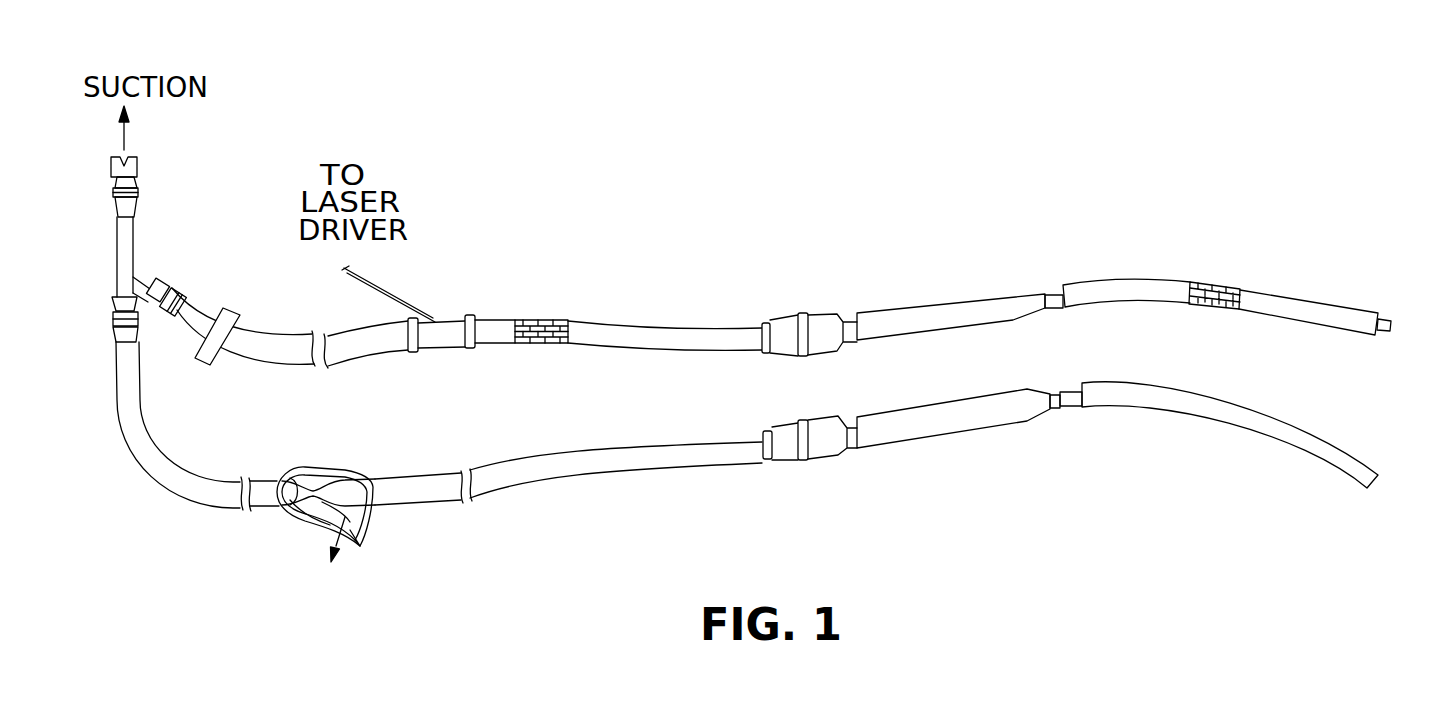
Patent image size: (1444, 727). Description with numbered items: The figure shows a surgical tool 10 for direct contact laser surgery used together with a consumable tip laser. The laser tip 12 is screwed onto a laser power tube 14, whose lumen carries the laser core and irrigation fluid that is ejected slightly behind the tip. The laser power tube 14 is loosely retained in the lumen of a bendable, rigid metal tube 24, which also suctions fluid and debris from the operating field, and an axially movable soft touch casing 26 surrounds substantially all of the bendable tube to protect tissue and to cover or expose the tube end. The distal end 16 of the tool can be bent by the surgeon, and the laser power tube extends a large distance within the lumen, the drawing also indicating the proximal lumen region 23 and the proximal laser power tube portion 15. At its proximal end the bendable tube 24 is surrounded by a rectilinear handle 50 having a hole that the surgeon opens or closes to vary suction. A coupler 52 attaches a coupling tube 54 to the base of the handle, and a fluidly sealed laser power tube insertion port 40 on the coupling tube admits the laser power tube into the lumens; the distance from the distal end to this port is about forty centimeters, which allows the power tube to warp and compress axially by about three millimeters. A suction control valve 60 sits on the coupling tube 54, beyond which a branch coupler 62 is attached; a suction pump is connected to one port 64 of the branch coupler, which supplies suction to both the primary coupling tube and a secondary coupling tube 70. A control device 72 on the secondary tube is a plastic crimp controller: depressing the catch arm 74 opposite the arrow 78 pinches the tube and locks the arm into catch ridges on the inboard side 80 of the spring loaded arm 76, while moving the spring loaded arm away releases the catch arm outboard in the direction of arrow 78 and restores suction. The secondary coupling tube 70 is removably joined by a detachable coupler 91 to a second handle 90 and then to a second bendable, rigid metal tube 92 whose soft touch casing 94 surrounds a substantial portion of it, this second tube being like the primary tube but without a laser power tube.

The surgical tool 10 is at (1106, 270).
The laser tip 12 is at (1391, 326).
The laser power tube 14 is at (1237, 289).
The proximal laser power tube portion 15 is at (553, 321).
The distal end 16 is at (1370, 307).
The proximal lumen region 23 is at (540, 344).
The bendable rigid tube 24 is at (1212, 288).
The soft touch casing 26 is at (1202, 282).
The laser power tube insertion port 40 is at (451, 318).
The handle 50 is at (933, 303).
The coupler 52 is at (812, 312).
The coupling tube 54 is at (697, 322).
The suction control valve 60 is at (233, 293).
The branch coupler 62 is at (135, 236).
The port 64 is at (138, 173).
The secondary coupling tube 70 is at (200, 510).
The control device 72 is at (318, 532).
The catch arm 74 is at (352, 546).
The spring loaded arm 76 is at (357, 537).
The arrow 78 is at (318, 520).
The inboard side 80 is at (360, 483).
The handle 90 is at (935, 438).
The detachable coupler 91 is at (805, 467).
The bendable rigid metal tube 92 is at (1068, 390).
The soft touch casing 94 is at (1185, 410).